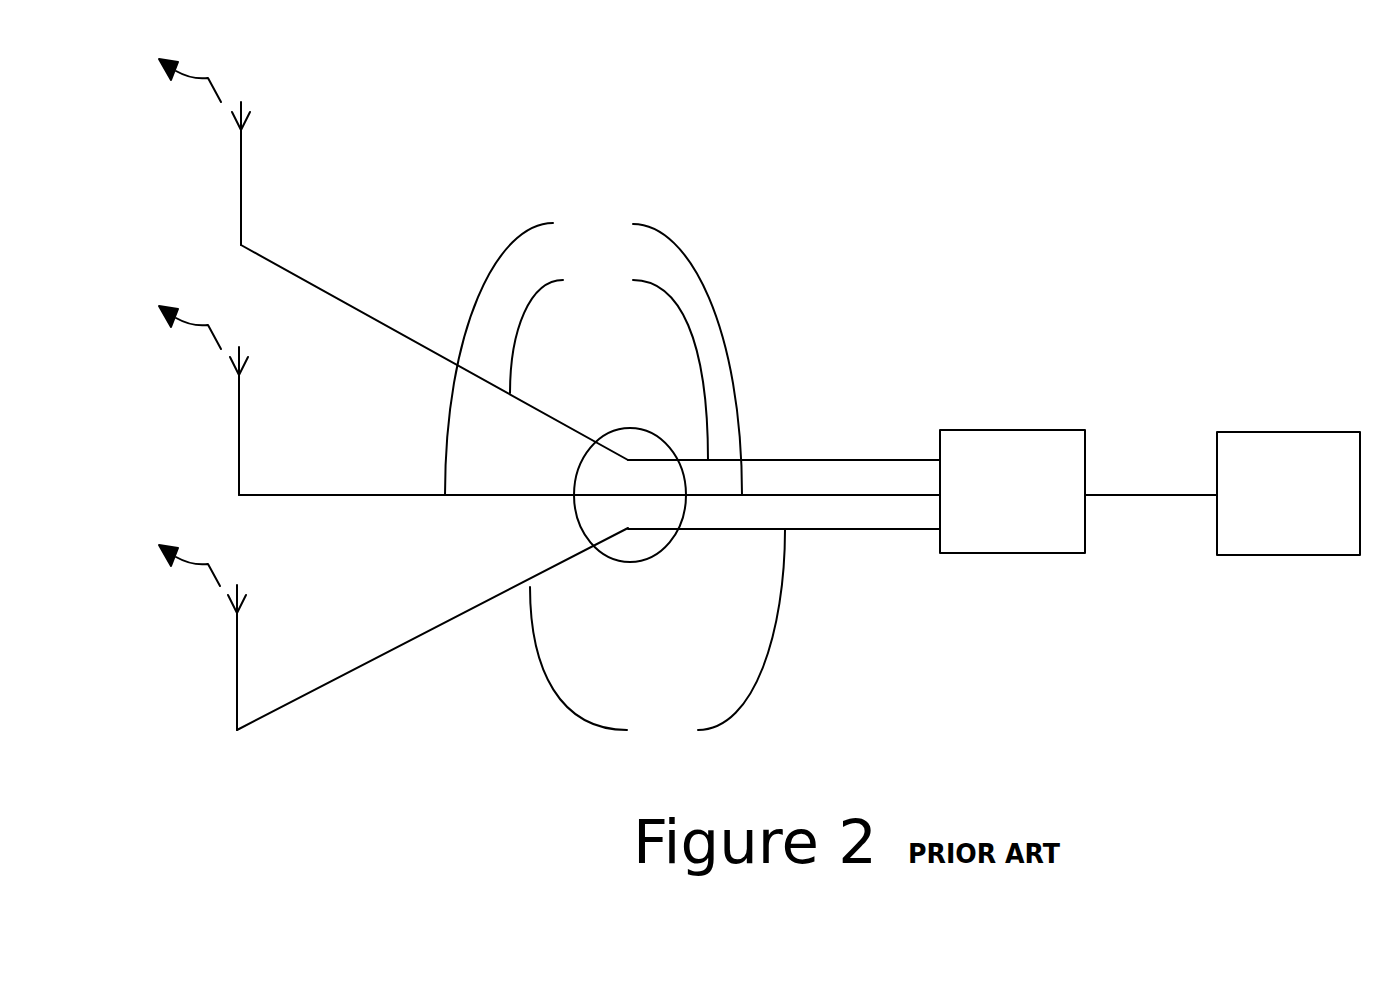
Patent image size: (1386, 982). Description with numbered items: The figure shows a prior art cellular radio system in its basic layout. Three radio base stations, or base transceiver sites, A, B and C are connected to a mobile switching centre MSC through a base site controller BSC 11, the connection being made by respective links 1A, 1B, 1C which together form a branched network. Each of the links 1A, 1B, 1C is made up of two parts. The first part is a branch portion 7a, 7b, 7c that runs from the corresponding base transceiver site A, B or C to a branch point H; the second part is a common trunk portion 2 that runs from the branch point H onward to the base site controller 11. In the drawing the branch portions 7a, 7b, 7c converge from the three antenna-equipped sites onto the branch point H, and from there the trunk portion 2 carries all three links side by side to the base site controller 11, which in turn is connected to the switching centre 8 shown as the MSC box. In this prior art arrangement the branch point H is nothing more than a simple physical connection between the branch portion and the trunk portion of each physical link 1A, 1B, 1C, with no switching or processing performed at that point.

The radio base station A is at (241, 190).
The radio base station B is at (239, 438).
The radio base station C is at (237, 675).
The branch portion 7a is at (358, 310).
The branch portion 7b is at (293, 495).
The branch portion 7c is at (345, 675).
The branch point H is at (630, 428).
The link 1A is at (609, 356).
The link 1B is at (593, 345).
The link 1C is at (657, 640).
The common trunk portion 2 is at (818, 460).
The base site controller 11 is at (1022, 430).
The mobile switching centre (MSC) 8 is at (1318, 432).